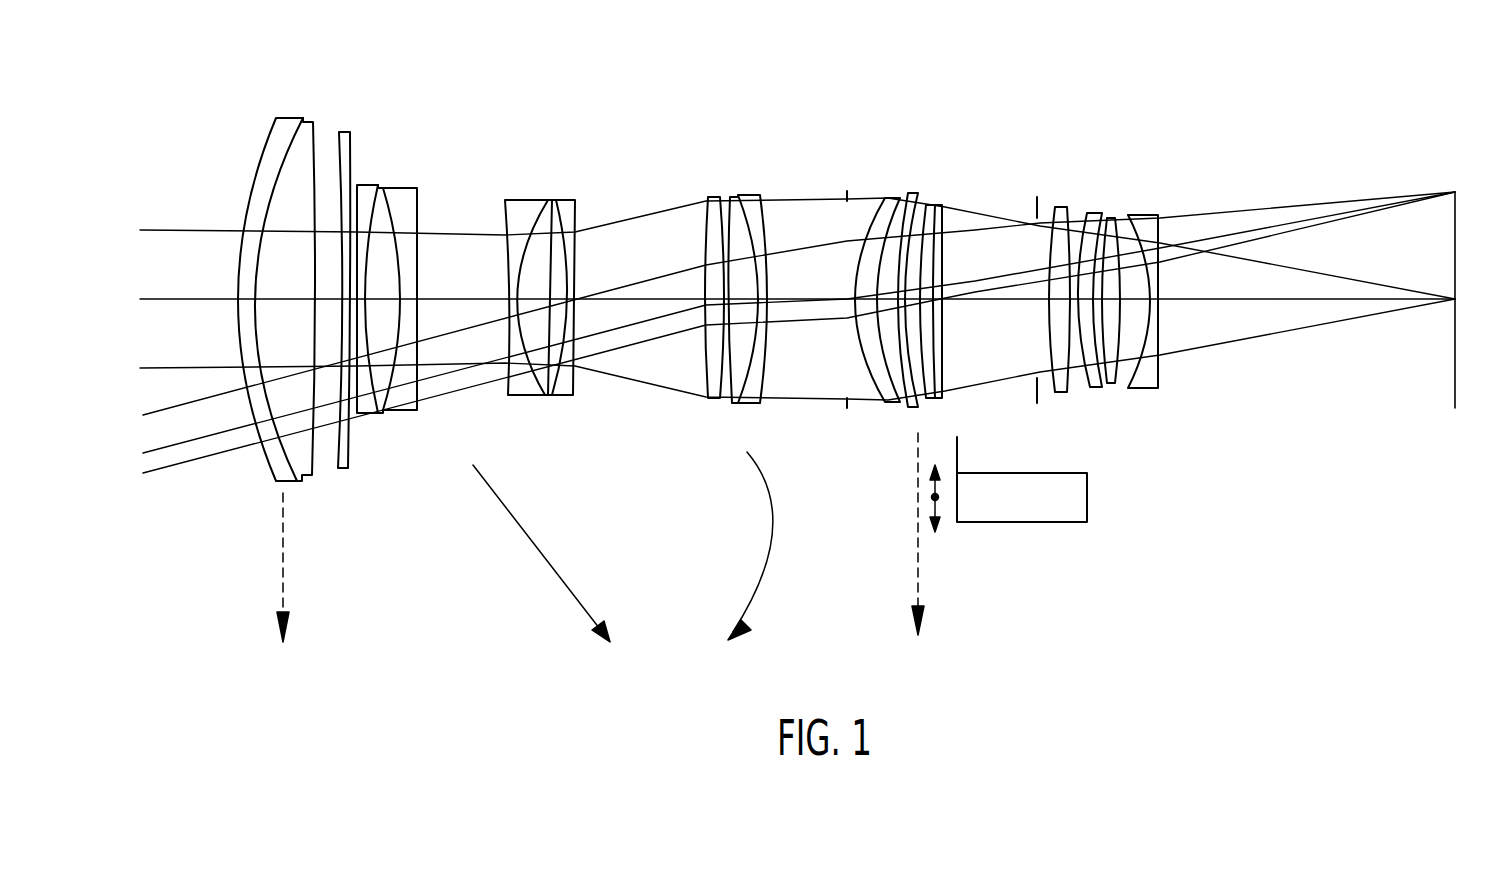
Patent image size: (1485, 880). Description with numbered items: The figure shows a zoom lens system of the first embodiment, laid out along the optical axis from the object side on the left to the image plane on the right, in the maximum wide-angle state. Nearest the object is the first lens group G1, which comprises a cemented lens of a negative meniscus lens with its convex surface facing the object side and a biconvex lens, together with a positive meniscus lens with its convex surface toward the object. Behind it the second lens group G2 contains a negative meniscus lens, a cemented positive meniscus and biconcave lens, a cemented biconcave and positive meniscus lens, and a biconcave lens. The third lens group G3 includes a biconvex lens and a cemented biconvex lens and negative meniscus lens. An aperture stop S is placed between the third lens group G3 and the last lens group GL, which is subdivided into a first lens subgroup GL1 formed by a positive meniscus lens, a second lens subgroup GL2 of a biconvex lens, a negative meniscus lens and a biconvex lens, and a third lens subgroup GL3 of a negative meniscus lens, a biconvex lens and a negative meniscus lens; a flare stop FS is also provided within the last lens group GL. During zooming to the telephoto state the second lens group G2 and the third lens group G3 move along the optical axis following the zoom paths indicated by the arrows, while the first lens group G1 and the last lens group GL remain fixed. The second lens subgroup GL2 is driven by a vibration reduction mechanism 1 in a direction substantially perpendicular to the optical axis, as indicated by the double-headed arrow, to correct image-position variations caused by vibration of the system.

The first lens group G1 is at (354, 112).
The second lens group G2 is at (595, 425).
The third lens group G3 is at (777, 180).
The last lens group GL is at (1163, 90).
The first lens subgroup GL1 is at (893, 197).
The second lens subgroup GL2 is at (1072, 402).
The third lens subgroup GL3 is at (1163, 197).
The aperture stop S is at (848, 196).
The flare stop FS is at (1034, 203).
The vibration reduction mechanism 1 is at (1073, 498).